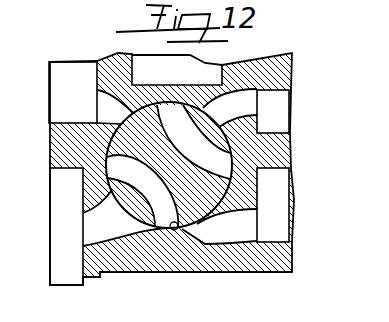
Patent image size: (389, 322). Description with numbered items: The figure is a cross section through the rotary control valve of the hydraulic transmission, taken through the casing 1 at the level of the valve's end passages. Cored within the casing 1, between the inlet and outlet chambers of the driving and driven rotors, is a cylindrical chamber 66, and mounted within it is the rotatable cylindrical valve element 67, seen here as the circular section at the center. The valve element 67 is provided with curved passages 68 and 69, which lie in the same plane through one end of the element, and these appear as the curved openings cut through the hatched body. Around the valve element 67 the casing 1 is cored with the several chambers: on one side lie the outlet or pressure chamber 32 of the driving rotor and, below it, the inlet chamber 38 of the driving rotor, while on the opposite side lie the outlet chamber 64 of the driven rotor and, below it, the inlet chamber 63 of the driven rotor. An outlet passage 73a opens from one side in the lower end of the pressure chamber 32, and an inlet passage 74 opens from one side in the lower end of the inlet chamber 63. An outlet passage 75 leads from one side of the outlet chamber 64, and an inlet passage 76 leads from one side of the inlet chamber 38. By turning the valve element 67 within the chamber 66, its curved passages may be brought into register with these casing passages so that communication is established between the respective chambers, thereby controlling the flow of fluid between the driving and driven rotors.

The casing 1 is at (243, 259).
The outlet or pressure chamber 32 is at (85, 93).
The inlet chamber 38 is at (67, 226).
The inlet chamber 63 is at (293, 222).
The outlet chamber 64 is at (282, 122).
The cylindrical chamber 66 is at (176, 230).
The rotatable cylindrical valve element 67 is at (196, 200).
The curved passage 68 is at (194, 143).
The curved passage 69 is at (142, 191).
The outlet passage 73a is at (118, 116).
The inlet passage 74 is at (220, 226).
The outlet passage 75 is at (257, 93).
The inlet passage 76 is at (97, 225).